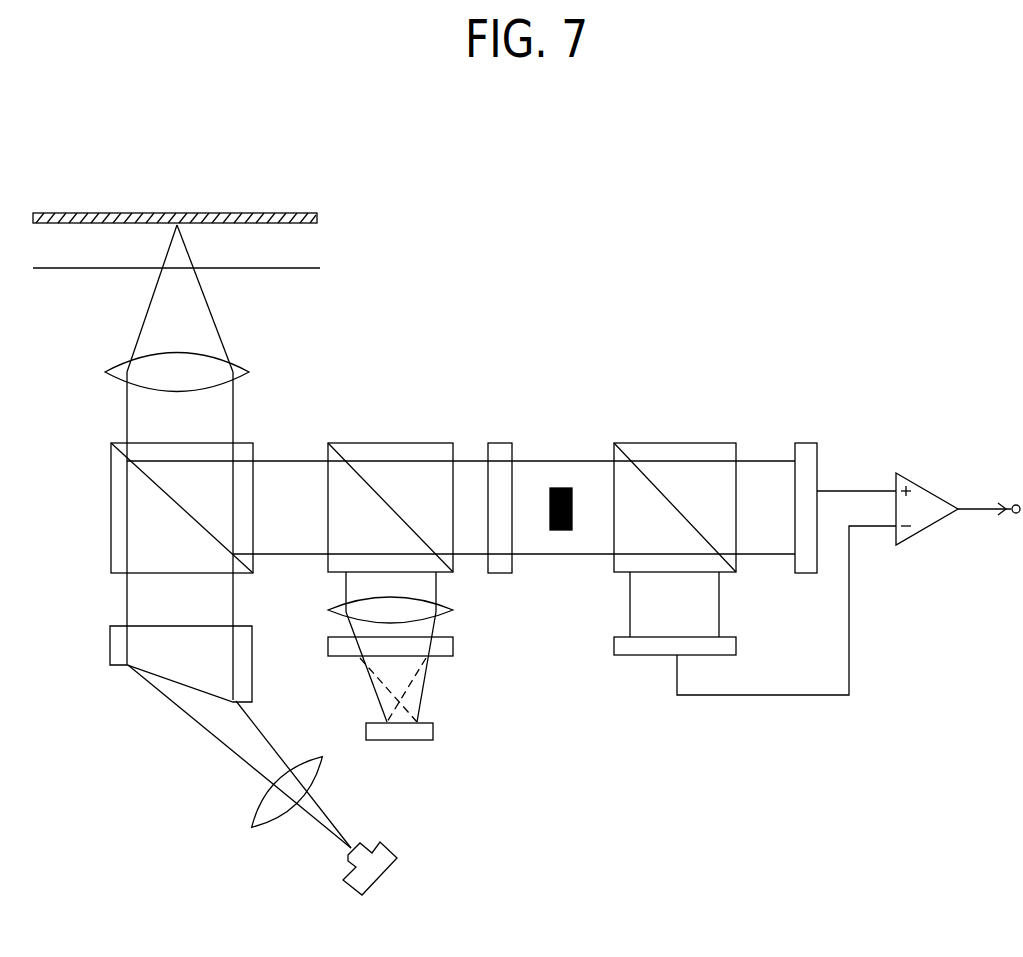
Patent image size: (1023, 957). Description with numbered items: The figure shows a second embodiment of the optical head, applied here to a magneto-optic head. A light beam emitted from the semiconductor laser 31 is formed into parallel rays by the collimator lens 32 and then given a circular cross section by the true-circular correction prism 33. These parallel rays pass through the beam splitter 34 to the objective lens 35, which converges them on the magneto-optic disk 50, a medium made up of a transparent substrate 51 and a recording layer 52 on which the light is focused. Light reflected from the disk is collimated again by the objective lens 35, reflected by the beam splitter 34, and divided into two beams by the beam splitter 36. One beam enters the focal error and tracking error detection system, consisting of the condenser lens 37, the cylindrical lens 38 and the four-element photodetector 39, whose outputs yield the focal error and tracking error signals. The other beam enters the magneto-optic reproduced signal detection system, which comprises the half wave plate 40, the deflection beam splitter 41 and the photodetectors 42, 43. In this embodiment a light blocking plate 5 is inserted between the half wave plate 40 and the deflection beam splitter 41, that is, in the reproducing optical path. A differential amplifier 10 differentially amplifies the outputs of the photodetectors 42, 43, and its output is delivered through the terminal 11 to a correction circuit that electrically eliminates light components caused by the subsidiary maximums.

The light blocking plate 5 is at (566, 484).
The differential amplifier 10 is at (930, 490).
The terminal 11 is at (1014, 503).
The semiconductor laser 31 is at (398, 862).
The collimator lens 32 is at (253, 818).
The true-circular correction prism 33 is at (110, 640).
The beam splitter 34 is at (111, 460).
The objective lens 35 is at (250, 372).
The beam splitter 36 is at (392, 443).
The condenser lens 37 is at (453, 602).
The cylindrical lens 38 is at (453, 645).
The 4-element photodetector 39 is at (437, 728).
The ½ wave plate 40 is at (496, 443).
The deflection beam splitter 41 is at (684, 443).
The photodetector 42 is at (736, 643).
The photodetector 43 is at (817, 455).
The magneto-optic disk 50 is at (259, 239).
The transparent substrate 51 is at (318, 251).
The recording layer 52 is at (320, 222).